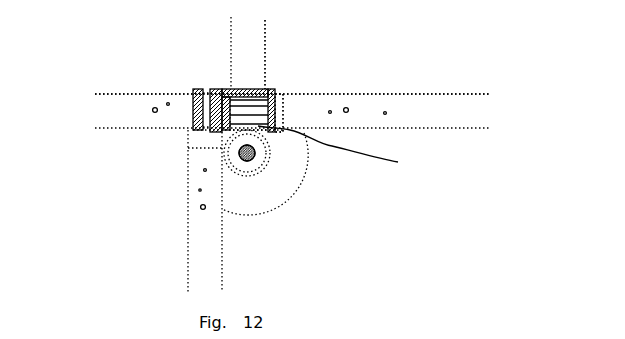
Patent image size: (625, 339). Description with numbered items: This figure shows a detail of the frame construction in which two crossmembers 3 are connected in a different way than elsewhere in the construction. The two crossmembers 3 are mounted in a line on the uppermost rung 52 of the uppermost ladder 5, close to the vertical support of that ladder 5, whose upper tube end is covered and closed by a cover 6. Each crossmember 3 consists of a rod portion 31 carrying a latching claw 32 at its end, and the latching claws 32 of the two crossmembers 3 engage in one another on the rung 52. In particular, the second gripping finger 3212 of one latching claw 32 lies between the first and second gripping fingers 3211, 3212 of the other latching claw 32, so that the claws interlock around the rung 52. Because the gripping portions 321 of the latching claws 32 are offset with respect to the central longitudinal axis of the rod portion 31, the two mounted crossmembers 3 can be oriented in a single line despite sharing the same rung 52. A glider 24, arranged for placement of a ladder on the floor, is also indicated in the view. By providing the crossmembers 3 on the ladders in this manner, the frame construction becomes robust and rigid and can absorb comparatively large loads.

The crossmember 3 is at (515, 112).
The rod portion 31 is at (423, 113).
The latching claw 32 is at (246, 121).
The gripping portion 321 is at (281, 87).
The first gripping finger 3211 is at (352, 132).
The second gripping finger 3212 is at (200, 118).
The assembly ladder 5 is at (218, 32).
The rung 52 is at (258, 33).
The cover 6 is at (257, 163).
The glider 24 is at (273, 198).